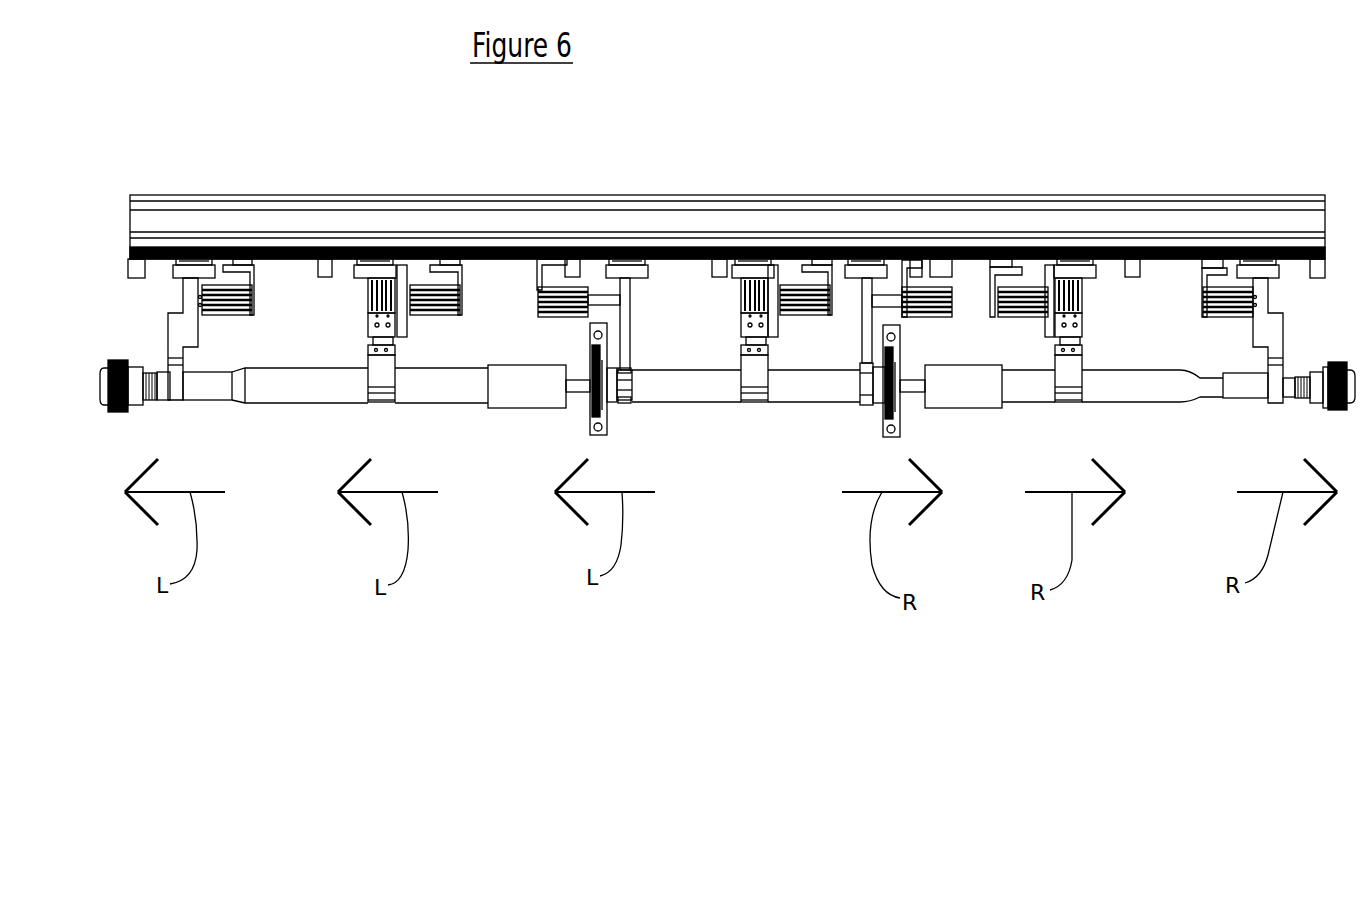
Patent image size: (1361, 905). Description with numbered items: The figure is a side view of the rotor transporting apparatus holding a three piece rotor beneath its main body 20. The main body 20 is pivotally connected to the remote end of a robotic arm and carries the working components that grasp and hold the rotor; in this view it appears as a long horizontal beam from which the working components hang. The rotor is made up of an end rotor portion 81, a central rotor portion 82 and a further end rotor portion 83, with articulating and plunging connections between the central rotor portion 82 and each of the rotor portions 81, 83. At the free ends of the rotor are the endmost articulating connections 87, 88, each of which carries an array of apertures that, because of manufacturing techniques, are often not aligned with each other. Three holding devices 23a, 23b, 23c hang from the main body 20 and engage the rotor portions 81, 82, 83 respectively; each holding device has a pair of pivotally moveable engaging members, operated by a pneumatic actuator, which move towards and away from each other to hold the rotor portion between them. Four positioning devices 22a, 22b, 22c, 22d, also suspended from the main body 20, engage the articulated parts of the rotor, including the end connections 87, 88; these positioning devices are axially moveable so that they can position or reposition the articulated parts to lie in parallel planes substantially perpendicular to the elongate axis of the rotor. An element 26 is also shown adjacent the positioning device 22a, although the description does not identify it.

The main body 20 is at (447, 222).
The spring 26 is at (218, 290).
The positioning device 22a is at (187, 290).
The positioning device 22b is at (630, 303).
The positioning device 22c is at (860, 300).
The positioning device 22d is at (1260, 290).
The holding device 23a is at (385, 380).
The holding device 23b is at (757, 378).
The holding device 23c is at (1067, 378).
The rotor portion 81 is at (300, 407).
The central rotor portion 82 is at (712, 388).
The rotor portion 83 is at (1025, 393).
The articulating connection 87 is at (112, 358).
The articulating connection 88 is at (1337, 360).